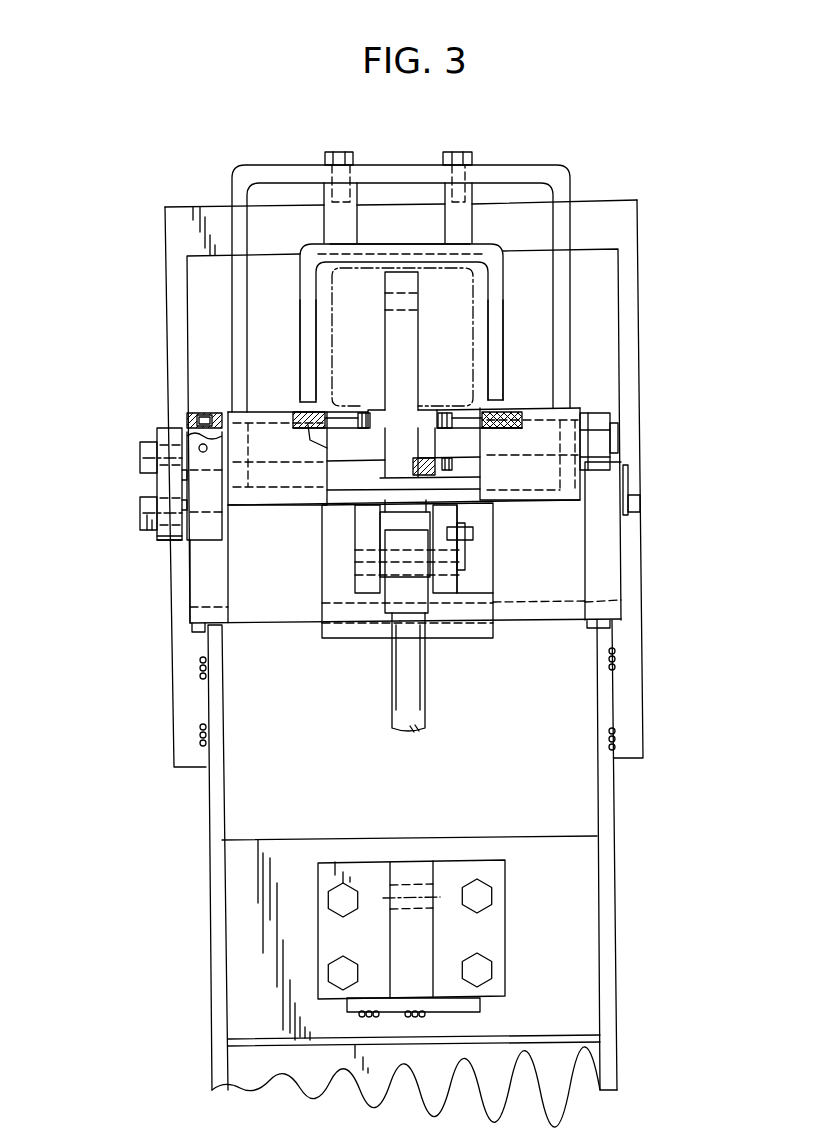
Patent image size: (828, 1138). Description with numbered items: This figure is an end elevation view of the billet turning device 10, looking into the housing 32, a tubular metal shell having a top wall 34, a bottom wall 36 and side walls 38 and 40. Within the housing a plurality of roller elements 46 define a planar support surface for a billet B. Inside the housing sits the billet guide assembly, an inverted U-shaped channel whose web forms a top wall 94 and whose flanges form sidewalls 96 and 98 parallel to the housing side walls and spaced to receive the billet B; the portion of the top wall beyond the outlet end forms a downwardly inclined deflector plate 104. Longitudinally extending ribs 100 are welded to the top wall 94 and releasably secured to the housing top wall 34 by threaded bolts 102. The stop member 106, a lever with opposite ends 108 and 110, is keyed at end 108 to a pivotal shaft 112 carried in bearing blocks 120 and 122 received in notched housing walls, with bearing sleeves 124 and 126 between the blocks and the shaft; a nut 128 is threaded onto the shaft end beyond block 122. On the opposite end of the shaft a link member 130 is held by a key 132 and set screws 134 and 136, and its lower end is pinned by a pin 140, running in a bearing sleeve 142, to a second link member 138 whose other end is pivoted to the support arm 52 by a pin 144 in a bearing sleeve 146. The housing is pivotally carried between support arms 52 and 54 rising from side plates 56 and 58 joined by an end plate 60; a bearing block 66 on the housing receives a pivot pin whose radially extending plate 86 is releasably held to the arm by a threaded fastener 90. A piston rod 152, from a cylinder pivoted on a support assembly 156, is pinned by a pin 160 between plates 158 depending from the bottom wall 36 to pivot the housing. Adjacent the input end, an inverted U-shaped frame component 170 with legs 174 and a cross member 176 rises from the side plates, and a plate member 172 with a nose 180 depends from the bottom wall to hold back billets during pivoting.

The billet turning device 10 is at (512, 50).
The housing 32 is at (534, 159).
The top wall 34 is at (494, 165).
The bottom wall 36 is at (470, 505).
The side wall 38 is at (232, 350).
The side wall 40 is at (567, 342).
The roller elements 46 is at (362, 412).
The support arm 52 is at (205, 580).
The support arm 54 is at (620, 556).
The side plate 56 is at (213, 823).
The side plate 58 is at (600, 812).
The end plate 60 is at (580, 713).
The bearing block 66 is at (540, 613).
The radially extending plate 86 is at (628, 478).
The threaded fastener 90 is at (638, 505).
The top wall 94 is at (400, 302).
The sidewall 96 is at (307, 323).
The sidewall 98 is at (502, 327).
The longitudinally extending ribs 100 is at (355, 215).
The threaded bolts 102 is at (343, 152).
The deflector plate 104 is at (383, 243).
The stop member 106 is at (406, 348).
The end of stop member 108 is at (422, 426).
The end of stop member 110 is at (420, 280).
The pivotal shaft 112 is at (507, 412).
The bearing block 120 is at (277, 498).
The bearing block 122 is at (543, 497).
The bearing sleeve 124 is at (297, 410).
The bearing sleeve 126 is at (482, 428).
The nut 128 is at (595, 417).
The link member 130 is at (210, 533).
The key 132 is at (188, 416).
The set screw 134 is at (200, 414).
The set screw 136 is at (160, 463).
The second link member 138 is at (162, 543).
The pin 140 is at (150, 533).
The bearing sleeve 142 is at (143, 493).
The pin 144 is at (140, 455).
The bearing sleeve 146 is at (180, 443).
The piston rod 152 is at (425, 707).
The support assembly 156 is at (458, 846).
The plates 158 is at (368, 592).
The pin 160 is at (355, 563).
The inverted U-shaped frame component 170 is at (401, 457).
The plate member 172 is at (483, 578).
The legs 174 is at (172, 298).
The cross member 176 is at (585, 215).
The nose 180 is at (437, 638).
The billet B is at (475, 300).